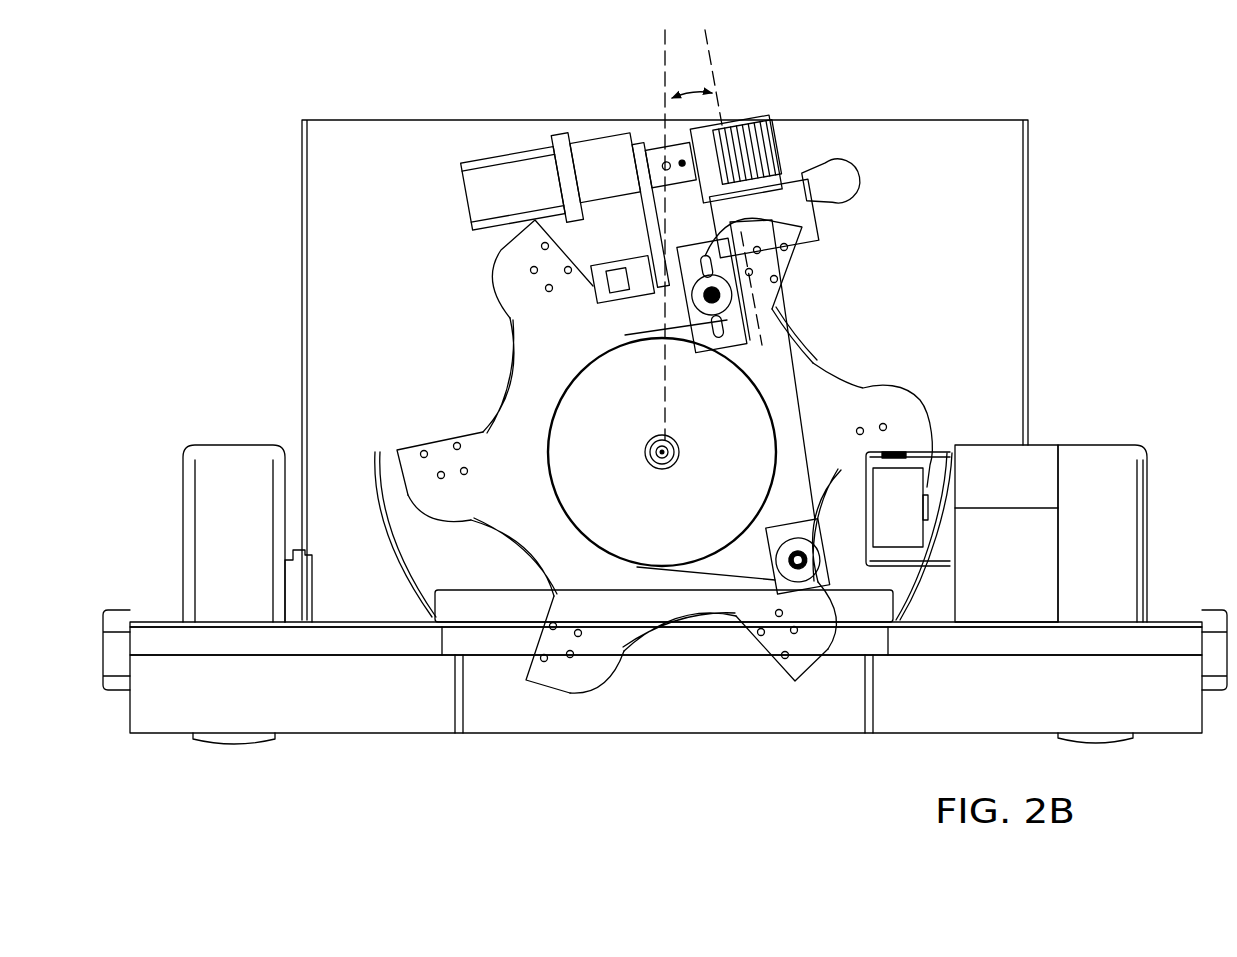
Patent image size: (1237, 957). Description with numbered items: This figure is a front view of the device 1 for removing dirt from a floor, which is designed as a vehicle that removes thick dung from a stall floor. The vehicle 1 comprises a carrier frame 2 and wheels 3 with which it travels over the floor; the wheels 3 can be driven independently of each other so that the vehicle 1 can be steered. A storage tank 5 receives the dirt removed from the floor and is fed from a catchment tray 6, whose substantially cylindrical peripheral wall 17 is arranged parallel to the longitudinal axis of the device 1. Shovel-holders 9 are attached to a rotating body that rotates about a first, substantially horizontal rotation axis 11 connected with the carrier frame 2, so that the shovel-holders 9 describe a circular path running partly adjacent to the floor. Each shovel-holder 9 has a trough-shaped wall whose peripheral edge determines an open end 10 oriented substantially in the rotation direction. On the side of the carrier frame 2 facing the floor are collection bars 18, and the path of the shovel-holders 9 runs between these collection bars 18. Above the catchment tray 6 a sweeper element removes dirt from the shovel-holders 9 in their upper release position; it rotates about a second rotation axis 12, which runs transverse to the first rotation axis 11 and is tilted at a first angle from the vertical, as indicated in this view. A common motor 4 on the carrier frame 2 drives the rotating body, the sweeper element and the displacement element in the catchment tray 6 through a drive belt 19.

The device 1 is at (1063, 187).
The carrier frame 2 is at (302, 247).
The wheels 3 is at (233, 492).
The motor 4 is at (505, 182).
The storage tank 5 is at (385, 187).
The catchment tray 6 is at (800, 342).
The shovel-holders 9 is at (420, 495).
The open end 10 is at (405, 445).
The first rotation axis 11 is at (662, 452).
The second rotation axis 12 is at (712, 77).
The peripheral wall 17 is at (815, 362).
The collection bars 18 is at (190, 702).
The drive belt 19 is at (793, 417).